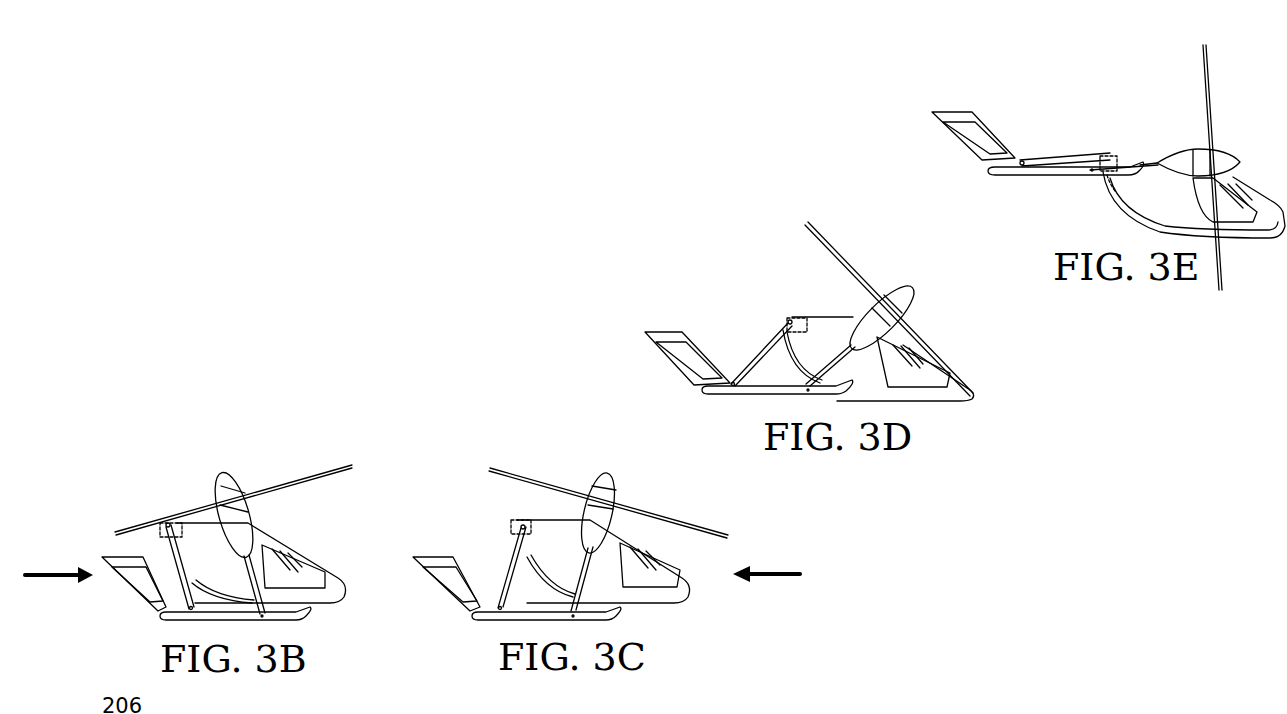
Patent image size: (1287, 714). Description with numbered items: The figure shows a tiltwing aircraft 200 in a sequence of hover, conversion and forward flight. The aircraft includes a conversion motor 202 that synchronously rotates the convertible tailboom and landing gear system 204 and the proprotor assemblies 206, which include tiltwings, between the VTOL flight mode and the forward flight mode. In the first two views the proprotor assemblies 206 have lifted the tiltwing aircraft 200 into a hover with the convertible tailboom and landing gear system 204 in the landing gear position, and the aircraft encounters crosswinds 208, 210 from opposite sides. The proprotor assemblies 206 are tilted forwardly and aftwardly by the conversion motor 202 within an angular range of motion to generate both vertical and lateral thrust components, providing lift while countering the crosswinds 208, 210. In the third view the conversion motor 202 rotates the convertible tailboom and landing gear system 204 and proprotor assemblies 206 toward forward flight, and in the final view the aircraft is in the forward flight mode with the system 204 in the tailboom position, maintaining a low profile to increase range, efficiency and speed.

In FIG. 3B, the tiltwing aircraft 200 is at (130, 472).
In FIG. 3C, the tiltwing aircraft 200 is at (466, 443).
In FIG. 3D, the tiltwing aircraft 200 is at (743, 260).
In FIG. 3E, the tiltwing aircraft 200 is at (1063, 102).
In FIG. 3B, the conversion motor 202 is at (182, 524).
In FIG. 3C, the conversion motor 202 is at (508, 527).
In FIG. 3D, the conversion motor 202 is at (812, 318).
In FIG. 3E, the conversion motor 202 is at (1125, 150).
In FIG. 3B, the convertible tailboom and landing gear system 204 is at (103, 557).
In FIG. 3C, the convertible tailboom and landing gear system 204 is at (413, 557).
In FIG. 3D, the convertible tailboom and landing gear system 204 is at (662, 331).
In FIG. 3E, the convertible tailboom and landing gear system 204 is at (950, 111).
In FIG. 3B, the proprotor assemblies 206 is at (224, 477).
In FIG. 3C, the proprotor assemblies 206 is at (618, 481).
In FIG. 3D, the proprotor assemblies 206 is at (897, 287).
In FIG. 3E, the proprotor assemblies 206 is at (1232, 153).
In FIG. 3B, the crosswind 208 is at (42, 573).
In FIG. 3C, the crosswind 210 is at (778, 571).